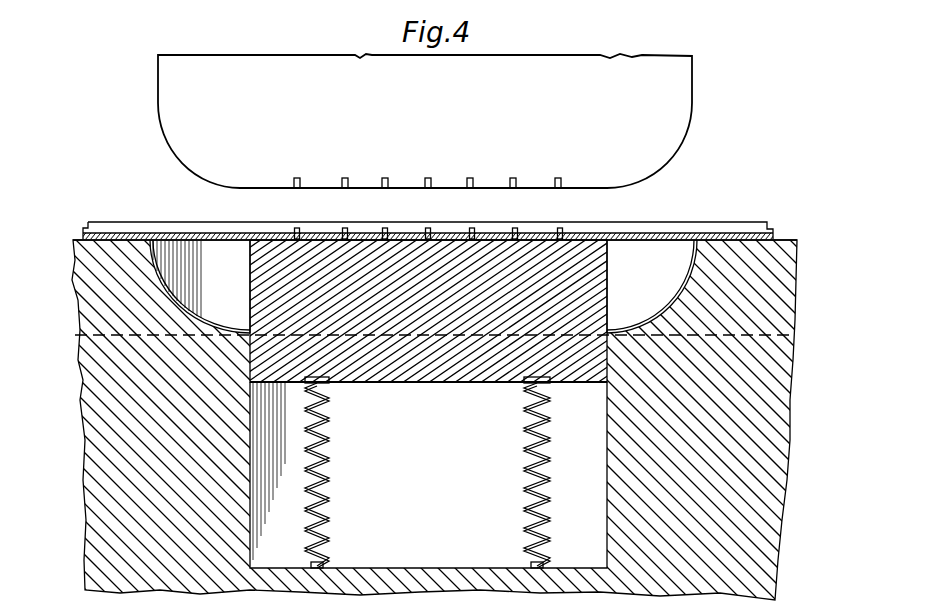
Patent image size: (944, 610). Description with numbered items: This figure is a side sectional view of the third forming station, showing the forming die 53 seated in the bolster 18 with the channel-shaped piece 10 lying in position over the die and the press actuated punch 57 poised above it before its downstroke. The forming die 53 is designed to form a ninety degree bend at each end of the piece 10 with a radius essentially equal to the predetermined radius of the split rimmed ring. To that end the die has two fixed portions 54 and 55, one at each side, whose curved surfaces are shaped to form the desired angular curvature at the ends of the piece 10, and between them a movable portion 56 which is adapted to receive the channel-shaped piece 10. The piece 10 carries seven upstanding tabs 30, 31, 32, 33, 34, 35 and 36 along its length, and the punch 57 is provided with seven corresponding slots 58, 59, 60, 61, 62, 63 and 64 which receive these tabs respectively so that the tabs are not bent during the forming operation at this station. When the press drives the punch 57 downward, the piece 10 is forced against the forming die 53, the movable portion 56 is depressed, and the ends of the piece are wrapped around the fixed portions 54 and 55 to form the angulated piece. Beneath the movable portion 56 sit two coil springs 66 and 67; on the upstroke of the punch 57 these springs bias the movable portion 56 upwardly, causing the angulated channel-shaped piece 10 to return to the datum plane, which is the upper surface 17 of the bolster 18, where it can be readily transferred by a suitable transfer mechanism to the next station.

The channel-shaped piece 10 is at (688, 222).
The datum plane 17 is at (80, 239).
The bolster 18 is at (790, 408).
The tab 30 is at (297, 227).
The tab 31 is at (345, 227).
The tab 32 is at (385, 227).
The tab 33 is at (428, 227).
The tab 34 is at (472, 227).
The tab 35 is at (515, 227).
The tab 36 is at (560, 227).
The forming die 53 is at (433, 386).
The fixed portion of forming die 54 is at (177, 303).
The fixed portion of forming die 55 is at (687, 292).
The movable portion 56 is at (389, 372).
The press actuated punch 57 is at (693, 103).
The slot 58 is at (297, 178).
The slot 59 is at (345, 178).
The slot 60 is at (385, 178).
The slot 61 is at (428, 178).
The slot 62 is at (470, 178).
The slot 63 is at (513, 178).
The slot 64 is at (558, 178).
The spring 66 is at (330, 497).
The spring 67 is at (528, 521).